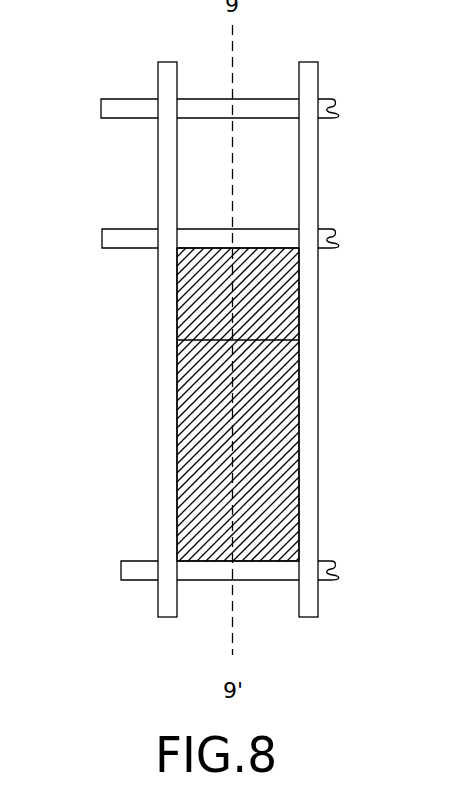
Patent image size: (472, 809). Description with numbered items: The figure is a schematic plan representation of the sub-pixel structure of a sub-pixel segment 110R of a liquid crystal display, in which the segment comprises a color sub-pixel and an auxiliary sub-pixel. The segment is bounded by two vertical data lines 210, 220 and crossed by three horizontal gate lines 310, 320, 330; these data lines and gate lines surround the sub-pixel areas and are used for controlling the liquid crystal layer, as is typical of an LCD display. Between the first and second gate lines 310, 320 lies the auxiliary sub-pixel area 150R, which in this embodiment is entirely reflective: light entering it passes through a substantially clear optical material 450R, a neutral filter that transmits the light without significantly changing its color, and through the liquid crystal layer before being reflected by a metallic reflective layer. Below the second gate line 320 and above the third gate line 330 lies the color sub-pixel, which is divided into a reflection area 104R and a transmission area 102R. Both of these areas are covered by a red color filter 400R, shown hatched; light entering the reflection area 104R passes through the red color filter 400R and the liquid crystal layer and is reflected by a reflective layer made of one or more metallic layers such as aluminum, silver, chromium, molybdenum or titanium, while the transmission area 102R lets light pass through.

The data line 210 is at (157, 72).
The data line 220 is at (319, 72).
The gate line 310 is at (118, 120).
The gate line 320 is at (130, 249).
The gate line 330 is at (140, 559).
The red color filter 400R is at (183, 420).
The substantially clear optical material 450R is at (200, 172).
The auxiliary sub-pixel area 150R is at (350, 193).
The reflection area 104R is at (354, 303).
The transmission area 102R is at (354, 462).
The sub-pixel segment 110R is at (191, 654).